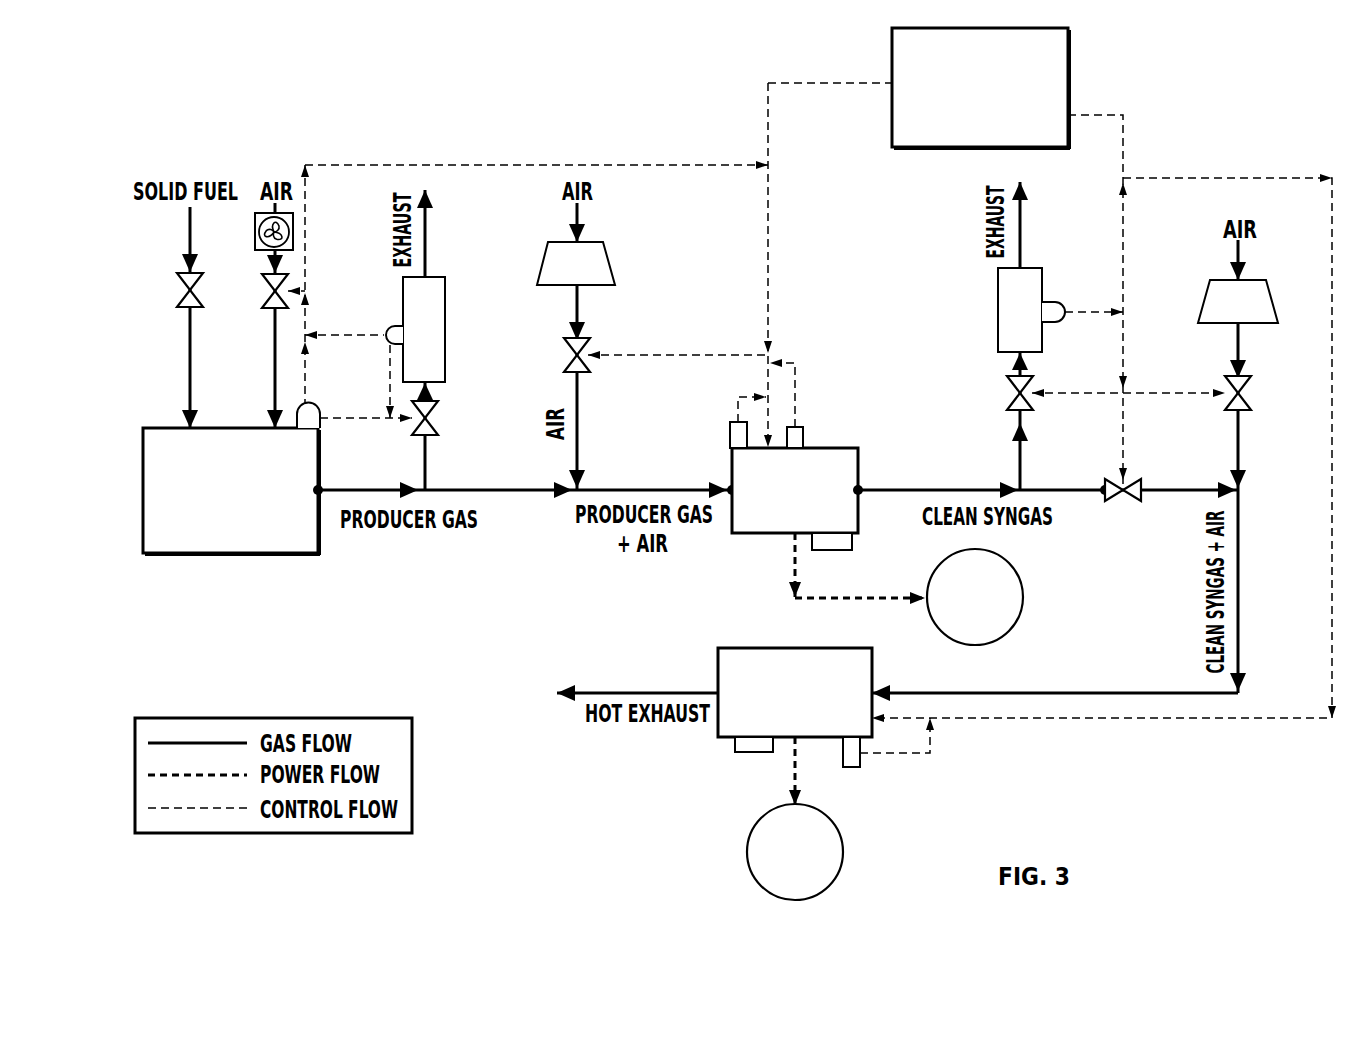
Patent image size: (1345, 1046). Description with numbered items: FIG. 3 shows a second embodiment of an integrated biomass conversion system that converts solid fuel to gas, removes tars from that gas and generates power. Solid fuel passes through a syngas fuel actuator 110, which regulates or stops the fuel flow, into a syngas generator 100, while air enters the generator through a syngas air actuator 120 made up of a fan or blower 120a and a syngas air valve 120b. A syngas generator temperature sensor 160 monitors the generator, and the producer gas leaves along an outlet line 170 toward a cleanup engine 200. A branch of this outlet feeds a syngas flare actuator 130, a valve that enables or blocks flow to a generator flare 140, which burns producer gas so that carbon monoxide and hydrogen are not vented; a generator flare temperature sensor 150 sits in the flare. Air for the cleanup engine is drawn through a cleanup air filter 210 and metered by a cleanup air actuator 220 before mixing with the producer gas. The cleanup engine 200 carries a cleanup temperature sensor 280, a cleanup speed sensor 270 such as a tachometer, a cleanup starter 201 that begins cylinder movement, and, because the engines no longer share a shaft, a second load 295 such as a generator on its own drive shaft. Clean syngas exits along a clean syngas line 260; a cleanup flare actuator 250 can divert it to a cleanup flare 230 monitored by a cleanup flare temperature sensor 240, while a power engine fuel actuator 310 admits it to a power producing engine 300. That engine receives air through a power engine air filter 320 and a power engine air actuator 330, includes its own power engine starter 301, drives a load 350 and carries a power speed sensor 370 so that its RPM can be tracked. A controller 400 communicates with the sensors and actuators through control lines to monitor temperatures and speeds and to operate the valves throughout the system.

The syngas generator 100 is at (192, 553).
The syngas fuel actuator 110 is at (177, 300).
The syngas air actuator 120 is at (292, 264).
The fan or blower 120a is at (295, 240).
The syngas air valve 120b is at (290, 285).
The syngas flare actuator 130 is at (437, 418).
The generator flare 140 is at (445, 325).
The generator flare temperature sensor 150 is at (384, 331).
The syngas generator temperature sensor 160 is at (320, 410).
The producer gas line 170 is at (495, 493).
The cleanup engine 200 is at (848, 447).
The cleanup starter 201 is at (830, 550).
The cleanup air filter 210 is at (610, 267).
The cleanup air actuator 220 is at (565, 343).
The cleanup flare 230 is at (998, 307).
The cleanup flare temperature sensor 240 is at (1060, 305).
The cleanup flare actuator 250 is at (1008, 383).
The clean syngas line 260 is at (890, 490).
The cleanup speed sensor 270 is at (803, 437).
The cleanup temperature sensor 280 is at (730, 437).
The second load 295 is at (1022, 592).
The power producing engine 300 is at (748, 648).
The power engine starter 301 is at (760, 752).
The power engine fuel actuator 310 is at (1105, 495).
The power engine air filter 320 is at (1270, 302).
The power engine air actuator 330 is at (1252, 390).
The load 350 is at (845, 852).
The power speed sensor 370 is at (855, 767).
The controller 400 is at (1068, 77).